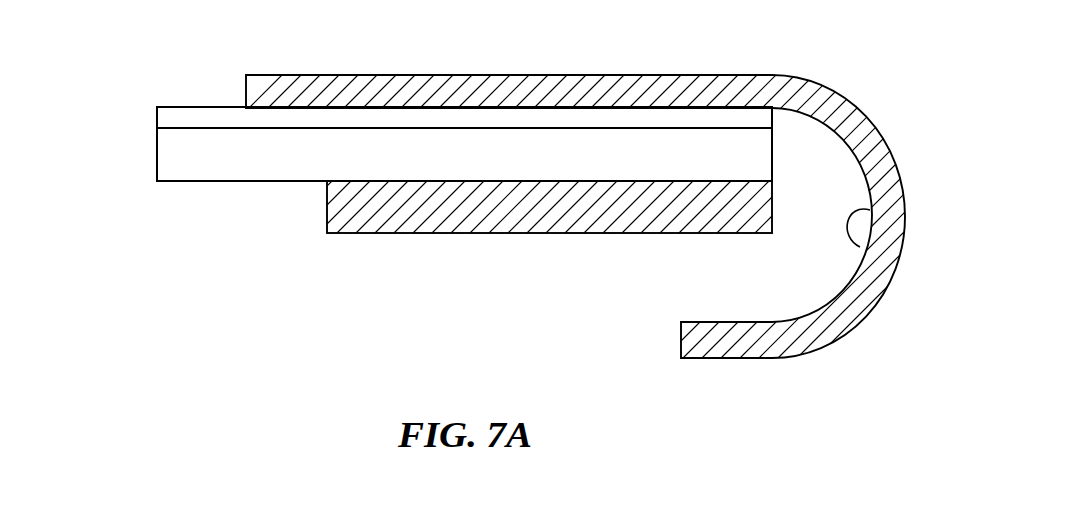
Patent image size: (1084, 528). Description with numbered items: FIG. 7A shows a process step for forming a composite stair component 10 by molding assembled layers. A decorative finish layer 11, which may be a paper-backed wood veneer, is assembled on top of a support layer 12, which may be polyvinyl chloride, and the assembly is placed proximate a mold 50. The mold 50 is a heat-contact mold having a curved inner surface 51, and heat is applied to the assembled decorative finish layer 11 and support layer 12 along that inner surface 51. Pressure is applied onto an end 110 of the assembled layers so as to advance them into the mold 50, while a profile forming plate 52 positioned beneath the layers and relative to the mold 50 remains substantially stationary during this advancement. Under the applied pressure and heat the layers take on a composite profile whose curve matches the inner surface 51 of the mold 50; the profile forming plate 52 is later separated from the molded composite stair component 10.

The end 110 is at (148, 131).
The composite stair component 10 is at (94, 110).
The decorative finish layer 11 is at (193, 112).
The support layer 12 is at (192, 155).
The mold 50 is at (855, 110).
The inner surface 51 is at (860, 247).
The profile forming plate 52 is at (423, 233).